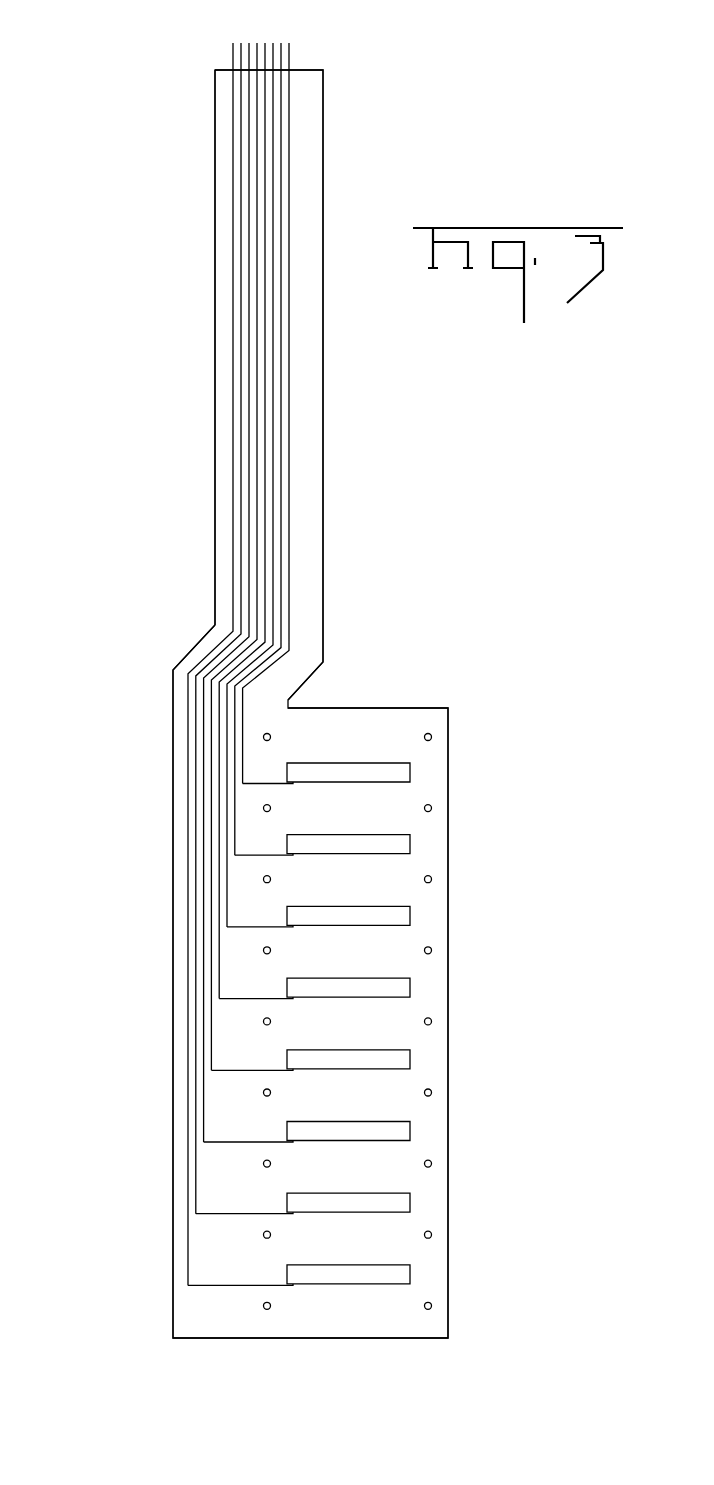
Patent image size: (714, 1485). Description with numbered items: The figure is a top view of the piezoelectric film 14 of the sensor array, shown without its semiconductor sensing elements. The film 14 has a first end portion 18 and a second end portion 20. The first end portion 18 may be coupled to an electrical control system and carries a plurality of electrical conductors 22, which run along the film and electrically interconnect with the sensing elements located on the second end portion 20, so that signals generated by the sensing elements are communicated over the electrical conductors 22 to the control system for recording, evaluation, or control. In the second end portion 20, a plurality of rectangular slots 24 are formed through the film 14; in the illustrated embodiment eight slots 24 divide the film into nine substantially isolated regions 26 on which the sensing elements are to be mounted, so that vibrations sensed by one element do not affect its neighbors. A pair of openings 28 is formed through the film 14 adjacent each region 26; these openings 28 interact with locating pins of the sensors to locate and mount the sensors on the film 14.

The piezoelectric film 14 is at (392, 557).
The first end portion 18 is at (290, 128).
The second end portion 20 is at (448, 868).
The electrical conductors 22 is at (257, 43).
The slots 24 is at (410, 845).
The regions 26 is at (348, 810).
The openings 28 is at (430, 735).